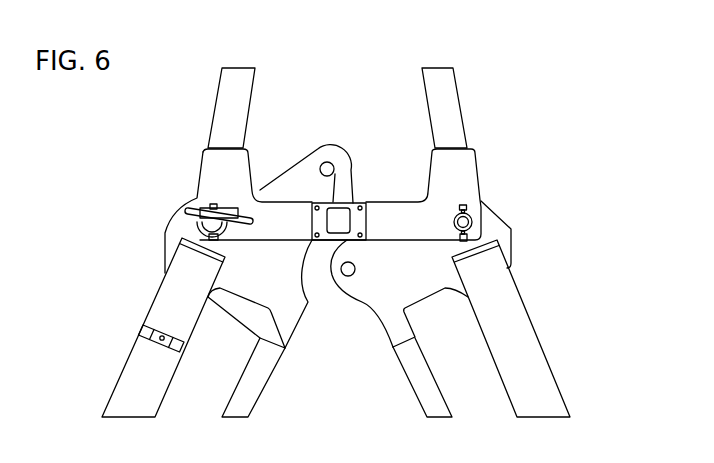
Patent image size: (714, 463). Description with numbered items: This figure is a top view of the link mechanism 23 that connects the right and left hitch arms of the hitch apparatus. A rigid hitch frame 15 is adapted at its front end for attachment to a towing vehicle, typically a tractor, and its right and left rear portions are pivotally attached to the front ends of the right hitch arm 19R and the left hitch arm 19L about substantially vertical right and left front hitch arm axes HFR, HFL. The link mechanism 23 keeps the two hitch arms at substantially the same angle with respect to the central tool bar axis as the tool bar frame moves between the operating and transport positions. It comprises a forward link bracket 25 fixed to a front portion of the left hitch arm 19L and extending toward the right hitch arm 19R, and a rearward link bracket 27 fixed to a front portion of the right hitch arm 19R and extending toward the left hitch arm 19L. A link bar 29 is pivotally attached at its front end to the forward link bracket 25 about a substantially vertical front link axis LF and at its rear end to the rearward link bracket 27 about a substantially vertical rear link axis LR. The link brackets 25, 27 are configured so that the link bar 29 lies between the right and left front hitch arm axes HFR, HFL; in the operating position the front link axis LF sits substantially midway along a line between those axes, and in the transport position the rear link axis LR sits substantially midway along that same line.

The link mechanism 23 is at (330, 92).
The rigid hitch frame 15 is at (460, 92).
The forward link bracket 25 is at (297, 158).
The front link axis LF is at (331, 161).
The rear link axis LR is at (344, 275).
The left front hitch arm axis HFL is at (197, 234).
The right front hitch arm axis HFR is at (466, 214).
The left hitch arm 19L is at (117, 385).
The right hitch arm 19R is at (553, 380).
The rearward link bracket 27 is at (386, 339).
The link bar 29 is at (322, 240).